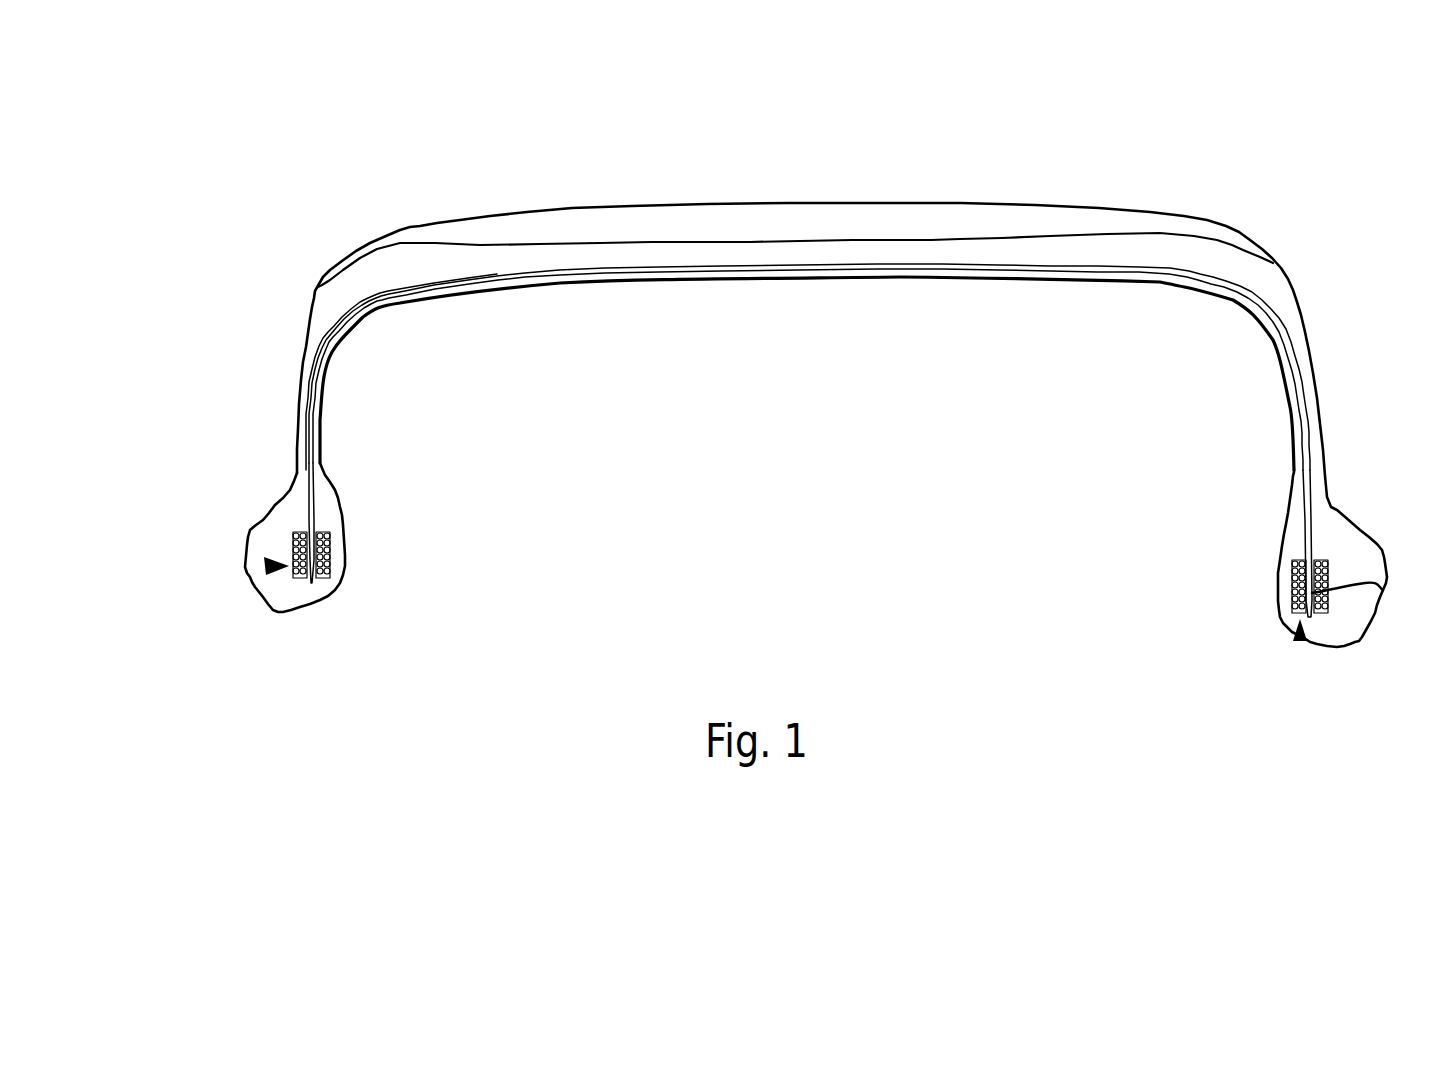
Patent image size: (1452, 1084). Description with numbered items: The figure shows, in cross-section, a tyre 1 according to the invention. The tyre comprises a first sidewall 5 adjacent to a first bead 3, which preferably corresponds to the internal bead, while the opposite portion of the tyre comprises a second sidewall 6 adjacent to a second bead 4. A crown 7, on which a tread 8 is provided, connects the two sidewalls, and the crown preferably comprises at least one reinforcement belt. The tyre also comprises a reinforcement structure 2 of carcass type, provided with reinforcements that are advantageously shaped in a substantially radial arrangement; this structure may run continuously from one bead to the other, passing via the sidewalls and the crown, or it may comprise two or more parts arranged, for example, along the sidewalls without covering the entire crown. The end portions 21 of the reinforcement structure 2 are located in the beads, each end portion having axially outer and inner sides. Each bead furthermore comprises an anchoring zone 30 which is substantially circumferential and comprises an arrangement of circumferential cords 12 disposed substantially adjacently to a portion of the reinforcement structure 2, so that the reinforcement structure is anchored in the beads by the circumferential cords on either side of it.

The tyre 1 is at (424, 214).
The reinforcement structure 2 is at (345, 320).
The first bead 3 is at (337, 542).
The second bead 4 is at (1287, 590).
The first sidewall 5 is at (318, 432).
The second sidewall 6 is at (1296, 418).
The crown 7 is at (793, 281).
The tread 8 is at (789, 211).
The circumferential cords 12 is at (327, 572).
The end portions 21 is at (1383, 590).
The anchoring zone 30 is at (264, 560).